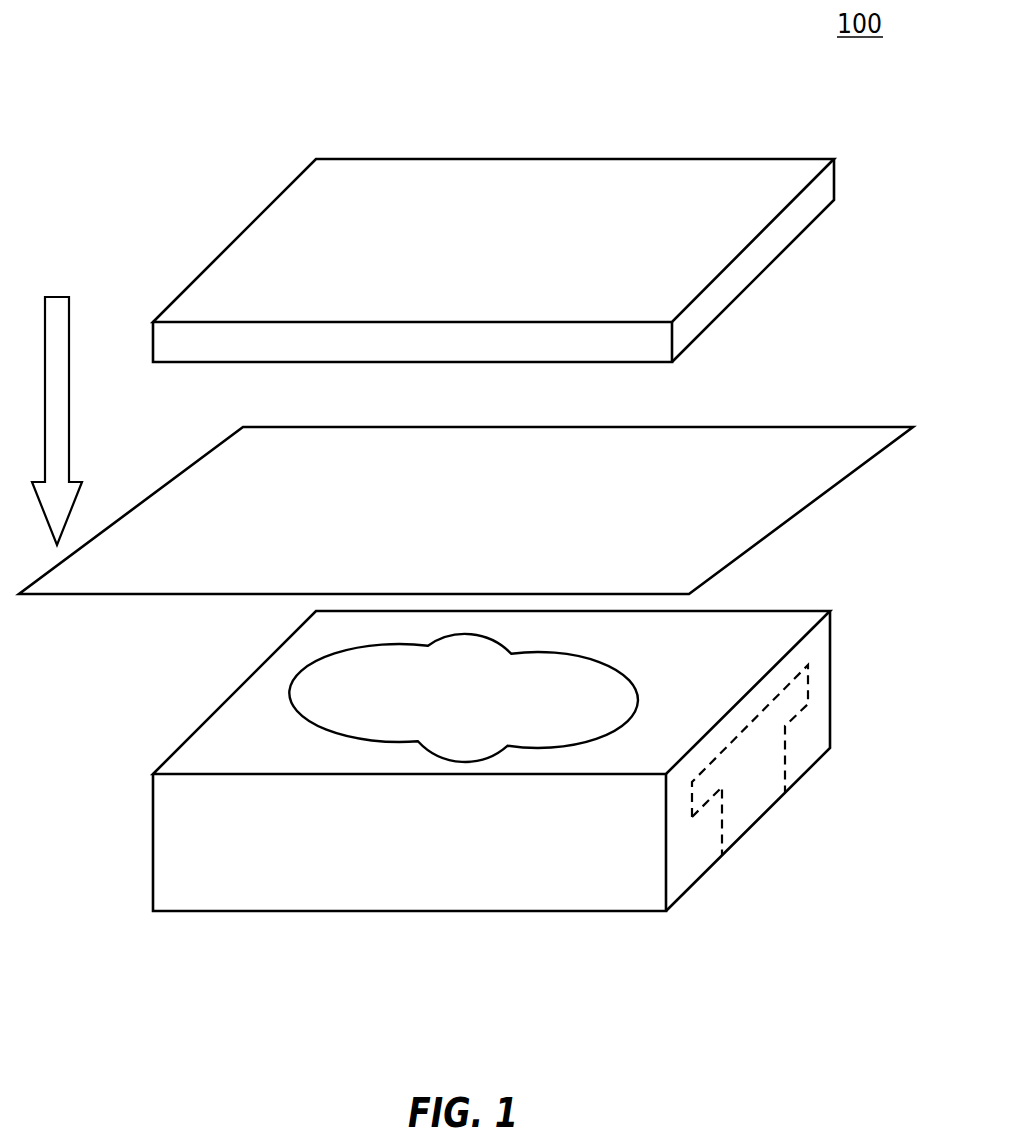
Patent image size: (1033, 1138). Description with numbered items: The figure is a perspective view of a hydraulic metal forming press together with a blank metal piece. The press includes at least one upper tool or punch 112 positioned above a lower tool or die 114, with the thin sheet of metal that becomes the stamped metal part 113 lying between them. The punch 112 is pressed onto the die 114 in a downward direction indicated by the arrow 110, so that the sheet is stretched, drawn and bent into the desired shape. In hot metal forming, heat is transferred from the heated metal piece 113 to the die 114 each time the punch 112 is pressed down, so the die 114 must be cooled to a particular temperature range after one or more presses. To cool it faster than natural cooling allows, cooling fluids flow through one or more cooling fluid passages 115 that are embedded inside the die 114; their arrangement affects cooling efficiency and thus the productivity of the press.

The arrow 110 is at (57, 336).
The upper tool or punch 112 is at (684, 163).
The stamped metal part 113 is at (803, 437).
The lower tool or die 114 is at (388, 895).
The cooling fluid passages 115 is at (723, 826).